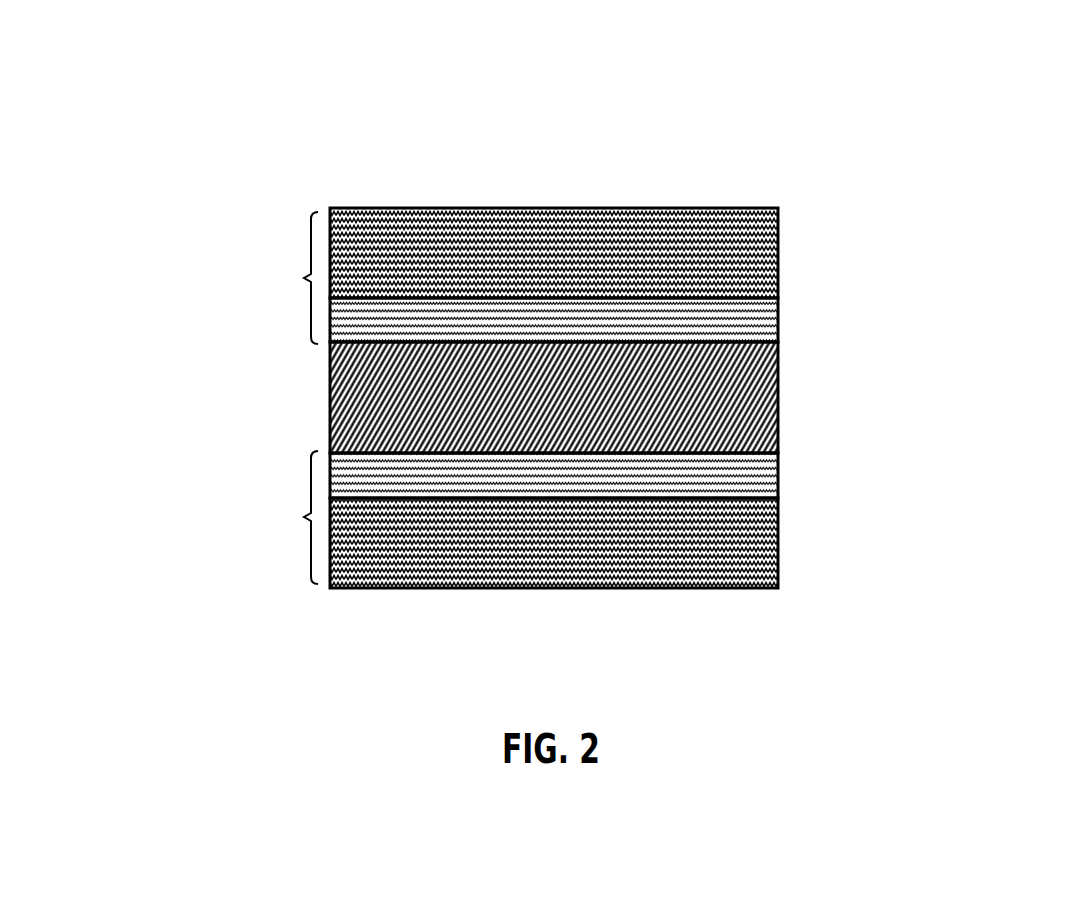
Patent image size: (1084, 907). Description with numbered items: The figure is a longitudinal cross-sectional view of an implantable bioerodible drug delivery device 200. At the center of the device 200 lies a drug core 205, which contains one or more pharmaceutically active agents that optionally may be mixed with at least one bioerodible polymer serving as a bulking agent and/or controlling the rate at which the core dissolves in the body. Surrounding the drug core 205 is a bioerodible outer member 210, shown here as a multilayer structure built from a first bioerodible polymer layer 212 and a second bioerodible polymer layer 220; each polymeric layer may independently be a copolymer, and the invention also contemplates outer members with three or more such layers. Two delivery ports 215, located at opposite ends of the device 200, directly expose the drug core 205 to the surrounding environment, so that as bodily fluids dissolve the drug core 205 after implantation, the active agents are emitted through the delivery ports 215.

The implantable drug delivery device 200 is at (498, 312).
The drug core 205 is at (459, 351).
The bioerodible outer member 210 is at (289, 513).
The first bioerodible polymer layer 212 is at (777, 315).
The delivery ports 215 is at (318, 402).
The second bioerodible polymer layer 220 is at (680, 196).